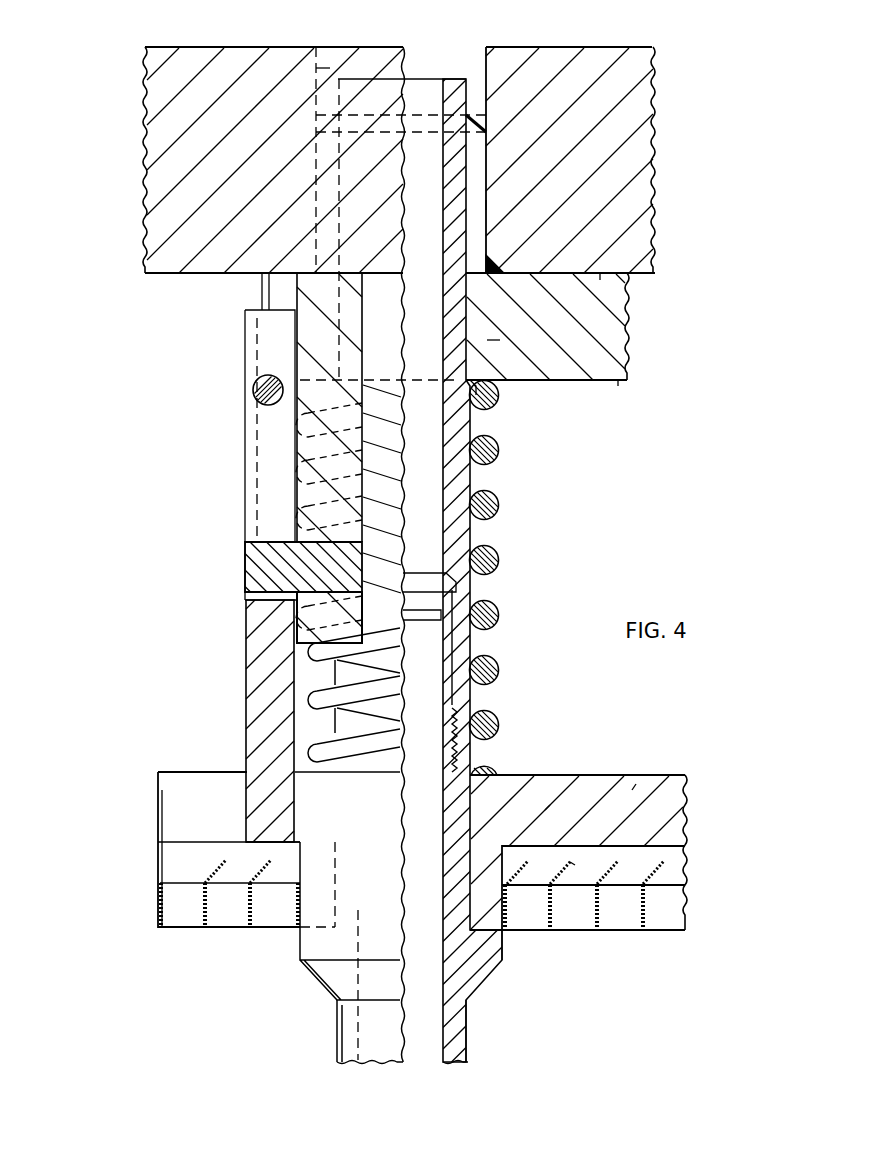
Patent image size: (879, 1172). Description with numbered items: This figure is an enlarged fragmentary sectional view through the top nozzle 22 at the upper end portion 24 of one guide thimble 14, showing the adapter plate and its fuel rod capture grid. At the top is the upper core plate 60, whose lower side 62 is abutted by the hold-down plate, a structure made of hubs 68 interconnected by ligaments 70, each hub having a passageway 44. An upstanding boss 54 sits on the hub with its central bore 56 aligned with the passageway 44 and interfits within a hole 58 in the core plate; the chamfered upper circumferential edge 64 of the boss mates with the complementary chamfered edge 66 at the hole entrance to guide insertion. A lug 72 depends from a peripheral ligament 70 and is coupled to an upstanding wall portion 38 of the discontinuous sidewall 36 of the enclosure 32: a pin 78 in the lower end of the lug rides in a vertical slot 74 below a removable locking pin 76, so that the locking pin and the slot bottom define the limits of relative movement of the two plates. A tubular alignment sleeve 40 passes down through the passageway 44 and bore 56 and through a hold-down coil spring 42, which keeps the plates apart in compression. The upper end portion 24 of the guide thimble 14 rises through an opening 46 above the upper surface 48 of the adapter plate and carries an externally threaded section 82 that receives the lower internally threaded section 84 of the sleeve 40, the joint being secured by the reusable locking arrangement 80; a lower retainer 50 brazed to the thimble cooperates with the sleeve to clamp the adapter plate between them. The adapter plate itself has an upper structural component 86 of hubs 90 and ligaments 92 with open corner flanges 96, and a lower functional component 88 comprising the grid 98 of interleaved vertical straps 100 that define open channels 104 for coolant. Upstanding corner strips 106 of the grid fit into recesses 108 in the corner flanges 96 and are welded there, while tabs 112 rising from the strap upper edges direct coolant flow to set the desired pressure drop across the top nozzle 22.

The guide thimble 14 is at (335, 1037).
The top nozzle 22 is at (168, 318).
The upper end portion 24 is at (337, 1010).
The enclosure 32 is at (185, 700).
The discontinuous sidewall 36 is at (245, 625).
The upstanding wall portion 38 is at (245, 660).
The tubular alignment sleeve 40 is at (472, 536).
The hold-down coil spring 42 is at (499, 503).
The passageway 44 is at (444, 292).
The opening 46 is at (468, 1030).
The upper surface 48 is at (605, 276).
The lower retainer 50 is at (505, 945).
The upstanding boss 54 is at (487, 207).
The central bore 56 is at (458, 133).
The hole 58 is at (332, 80).
The upper core plate 60 is at (650, 93).
The lower side 62 is at (548, 276).
The upper circumferential edge 64 is at (478, 117).
The chamfered edge 66 is at (487, 340).
The hub 68 is at (487, 342).
The ligament 70 is at (618, 384).
The lug 72 is at (297, 446).
The vertical slot 74 is at (245, 575).
The locking pin 76 is at (253, 390).
The pin 78 is at (245, 545).
The reusable locking arrangement 80 is at (420, 562).
The externally threaded section 82 is at (470, 715).
The internally threaded section 84 is at (450, 755).
The upper structural component 86 is at (685, 795).
The lower functional component 88 is at (692, 905).
The hub 90 is at (550, 805).
The ligament 92 is at (636, 784).
The open corner flange 96 is at (175, 773).
The grid 98 is at (670, 935).
The strap 100 is at (630, 932).
The open channel 104 is at (278, 905).
The corner strip 106 is at (158, 903).
The recess 108 is at (158, 823).
The tab 112 is at (618, 868).